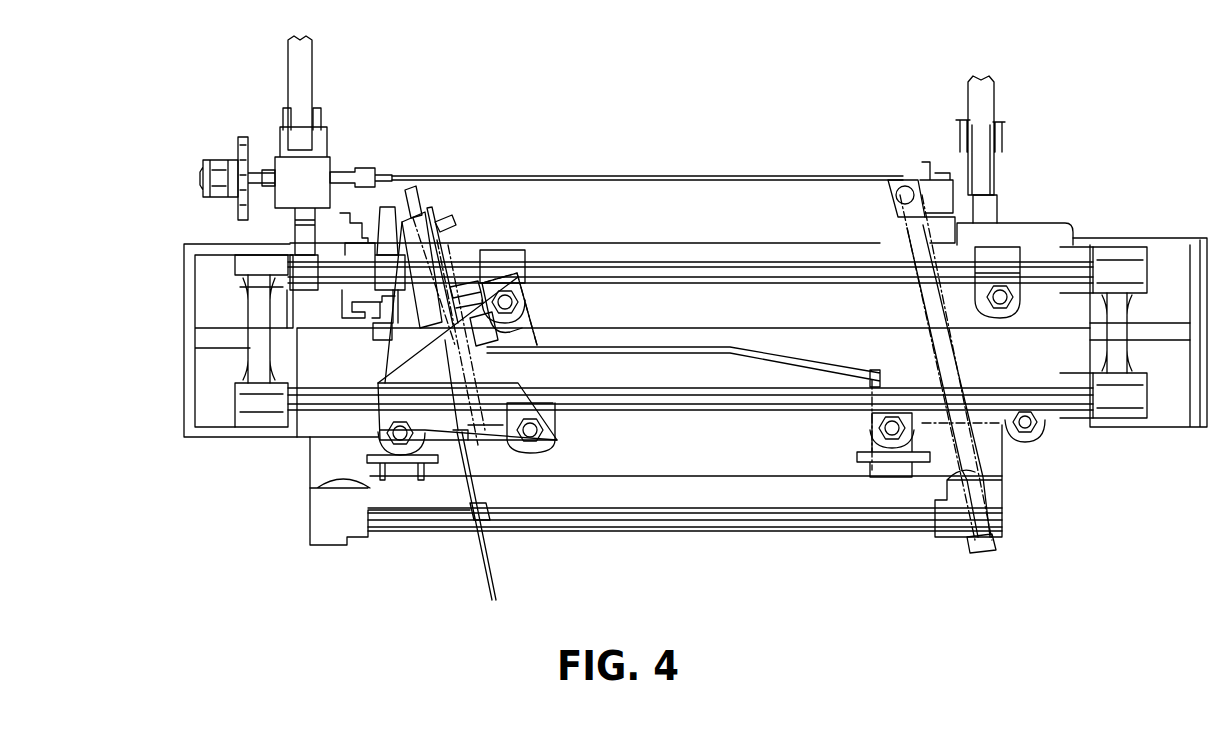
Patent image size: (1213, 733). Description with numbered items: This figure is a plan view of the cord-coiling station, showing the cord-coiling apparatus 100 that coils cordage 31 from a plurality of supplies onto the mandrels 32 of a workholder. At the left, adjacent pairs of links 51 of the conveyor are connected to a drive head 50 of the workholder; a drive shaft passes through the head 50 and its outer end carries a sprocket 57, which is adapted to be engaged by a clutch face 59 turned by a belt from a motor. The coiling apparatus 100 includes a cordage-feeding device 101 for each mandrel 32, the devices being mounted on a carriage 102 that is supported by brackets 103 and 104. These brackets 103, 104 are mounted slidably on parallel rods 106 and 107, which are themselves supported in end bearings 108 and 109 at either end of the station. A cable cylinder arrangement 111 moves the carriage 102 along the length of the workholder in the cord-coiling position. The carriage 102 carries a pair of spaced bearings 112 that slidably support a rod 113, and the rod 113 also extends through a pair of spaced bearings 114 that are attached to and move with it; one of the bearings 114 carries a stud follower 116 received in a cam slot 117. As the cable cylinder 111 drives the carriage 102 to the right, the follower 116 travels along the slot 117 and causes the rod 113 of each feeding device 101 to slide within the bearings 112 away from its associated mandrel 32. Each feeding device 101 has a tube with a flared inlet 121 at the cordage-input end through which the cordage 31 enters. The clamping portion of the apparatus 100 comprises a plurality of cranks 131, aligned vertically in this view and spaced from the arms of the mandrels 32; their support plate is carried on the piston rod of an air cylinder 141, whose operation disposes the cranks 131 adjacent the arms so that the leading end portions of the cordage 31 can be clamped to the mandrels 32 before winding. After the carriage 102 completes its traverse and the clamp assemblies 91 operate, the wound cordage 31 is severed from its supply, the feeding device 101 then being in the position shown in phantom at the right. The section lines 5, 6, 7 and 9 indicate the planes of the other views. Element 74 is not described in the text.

The cordage 31 is at (500, 584).
The mandrel 32 is at (755, 152).
The drive head 50 is at (332, 150).
The link 51 is at (306, 82).
The sprocket 57 is at (248, 135).
The clutch face 59 is at (218, 165).
The shaft coupling 74 is at (394, 170).
The clamp assembly 91 is at (914, 168).
The cord-coiling apparatus 100 is at (489, 330).
The cordage-feeding device 101 is at (429, 188).
The carriage 102 is at (530, 313).
The bracket 103 is at (556, 385).
The bracket 104 is at (518, 252).
The parallel rod 106 is at (780, 283).
The parallel rod 107 is at (785, 412).
The end bearing 108 is at (232, 437).
The end bearing 109 is at (1110, 425).
The cable cylinder arrangement 111 is at (690, 532).
The bearing 112 is at (450, 296).
The rod 113 is at (450, 235).
The bearing 114 is at (430, 212).
The stud follower 116 is at (488, 340).
The cam slot 117 is at (744, 378).
The flared inlet 121 is at (968, 552).
The crank 131 is at (342, 215).
The air cylinder 141 is at (378, 355).
The section line 5- 5 is at (183, 203).
The section line 6- 6 is at (385, 202).
The section line 7- 7 is at (402, 148).
The section line 9- 9 is at (950, 147).